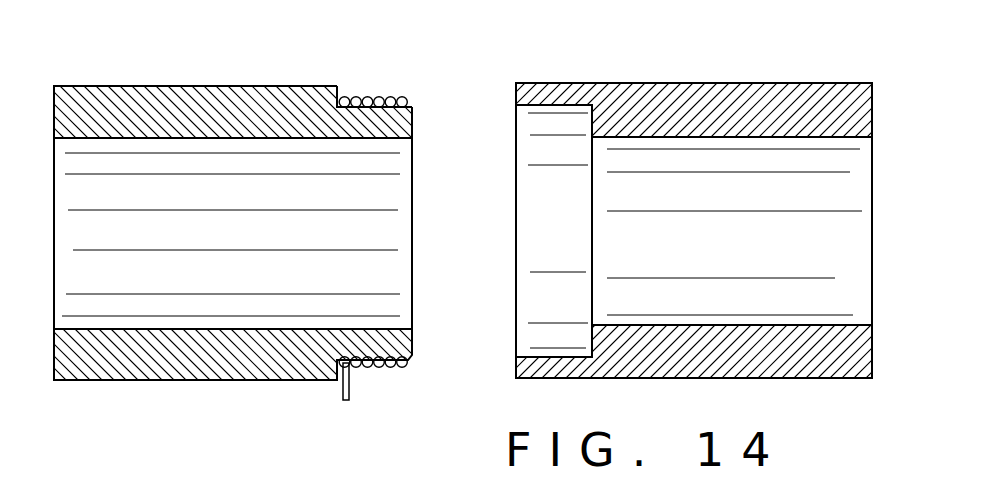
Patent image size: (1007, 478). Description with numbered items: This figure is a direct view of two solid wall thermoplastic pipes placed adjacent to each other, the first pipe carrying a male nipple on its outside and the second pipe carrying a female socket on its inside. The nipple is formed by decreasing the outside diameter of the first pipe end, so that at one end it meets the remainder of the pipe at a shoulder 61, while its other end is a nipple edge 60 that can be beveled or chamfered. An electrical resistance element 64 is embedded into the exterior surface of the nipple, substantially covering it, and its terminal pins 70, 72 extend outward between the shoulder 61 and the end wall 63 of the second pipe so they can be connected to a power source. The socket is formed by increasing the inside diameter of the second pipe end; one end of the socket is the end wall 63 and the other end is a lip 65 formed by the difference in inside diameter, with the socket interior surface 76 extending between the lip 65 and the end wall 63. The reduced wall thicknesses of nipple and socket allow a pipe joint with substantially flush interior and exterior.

The nipple edge 60 is at (414, 107).
The shoulder 61 is at (341, 93).
The electrical resistance element 64 is at (369, 92).
The terminal pin 70 is at (277, 390).
The terminal pin 72 is at (341, 393).
The end wall 63 is at (515, 94).
The lip 65 is at (595, 117).
The socket interior surface 76 is at (559, 109).